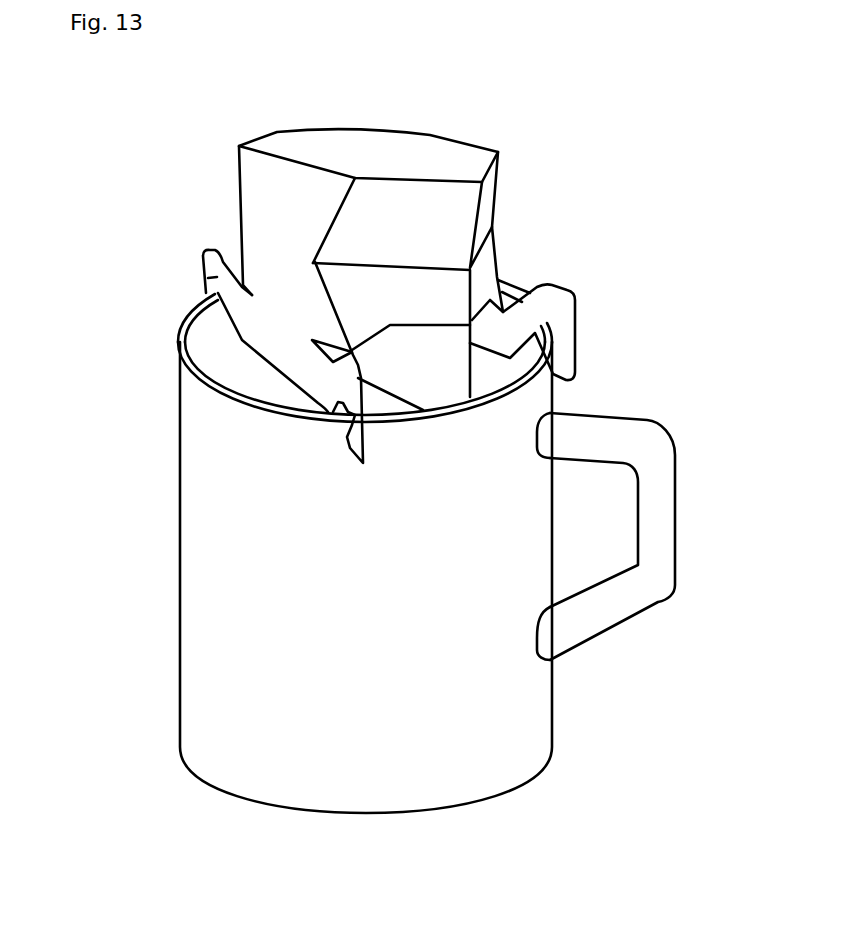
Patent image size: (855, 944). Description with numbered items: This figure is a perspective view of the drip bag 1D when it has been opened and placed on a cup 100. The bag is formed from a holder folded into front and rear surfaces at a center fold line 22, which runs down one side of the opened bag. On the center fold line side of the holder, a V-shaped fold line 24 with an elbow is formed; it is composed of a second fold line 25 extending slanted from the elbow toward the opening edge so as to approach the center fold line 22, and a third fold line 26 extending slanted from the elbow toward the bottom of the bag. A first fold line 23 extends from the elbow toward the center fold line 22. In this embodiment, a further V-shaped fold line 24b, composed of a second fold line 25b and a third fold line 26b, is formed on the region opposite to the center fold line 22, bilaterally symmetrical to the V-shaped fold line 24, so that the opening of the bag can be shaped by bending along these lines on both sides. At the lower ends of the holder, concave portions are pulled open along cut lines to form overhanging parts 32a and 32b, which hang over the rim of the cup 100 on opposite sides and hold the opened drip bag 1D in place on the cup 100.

The drip bag 1D is at (142, 148).
The center fold line 22 is at (480, 208).
The first fold line 23 is at (395, 268).
The V-shaped fold line 24 is at (372, 91).
The second fold line 25 is at (338, 212).
The third fold line 26 is at (337, 320).
The V-shaped fold line 24b is at (257, 93).
The second fold line 25b is at (241, 196).
The third fold line 26b is at (258, 292).
The overhanging part 32a is at (568, 320).
The overhanging part 32b is at (215, 278).
The cup 100 is at (178, 597).